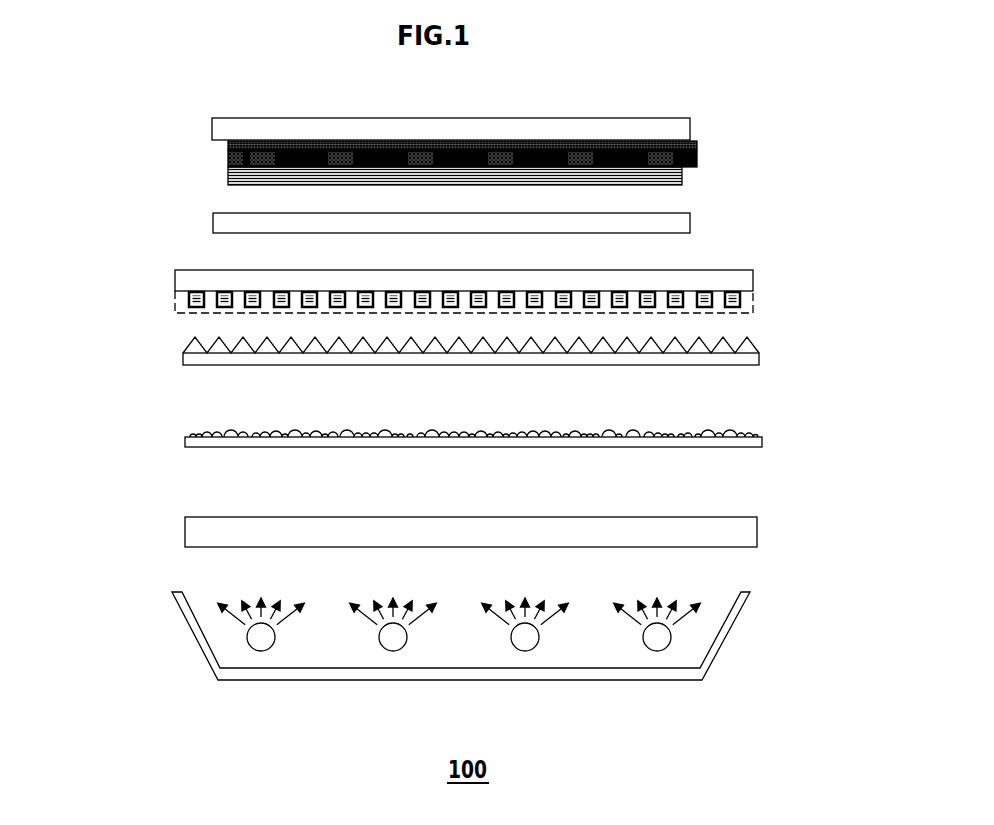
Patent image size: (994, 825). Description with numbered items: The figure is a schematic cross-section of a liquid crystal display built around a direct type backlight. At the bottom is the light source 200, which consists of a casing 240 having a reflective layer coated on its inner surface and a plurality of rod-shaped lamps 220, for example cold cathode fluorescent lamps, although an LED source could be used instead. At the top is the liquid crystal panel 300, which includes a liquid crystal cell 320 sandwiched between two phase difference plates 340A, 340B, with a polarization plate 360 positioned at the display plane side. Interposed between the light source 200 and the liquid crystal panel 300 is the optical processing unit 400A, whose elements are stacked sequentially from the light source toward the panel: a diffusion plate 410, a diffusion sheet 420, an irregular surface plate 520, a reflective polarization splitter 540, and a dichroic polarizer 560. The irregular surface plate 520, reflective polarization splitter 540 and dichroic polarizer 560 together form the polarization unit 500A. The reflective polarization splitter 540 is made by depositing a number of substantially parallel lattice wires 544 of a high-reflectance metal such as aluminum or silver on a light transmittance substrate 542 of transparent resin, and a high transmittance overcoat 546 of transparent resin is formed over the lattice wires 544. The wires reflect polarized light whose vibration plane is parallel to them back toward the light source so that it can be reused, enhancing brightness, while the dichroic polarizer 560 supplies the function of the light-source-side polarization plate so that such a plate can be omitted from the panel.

The light source 200 is at (487, 664).
The rod-shaped lamp 220 is at (258, 638).
The casing 240 is at (349, 668).
The liquid crystal panel 300 is at (470, 135).
The liquid crystal cell 320 is at (222, 158).
The phase difference plate 340A is at (696, 147).
The phase difference plate 340B is at (682, 177).
The polarization plate 360 is at (635, 126).
The optical processing unit 400A is at (441, 377).
The diffusion plate 410 is at (185, 527).
The diffusion sheet 420 is at (185, 440).
The polarization unit 500A is at (383, 294).
The irregular surface plate 520 is at (428, 356).
The reflective polarization splitter 540 is at (425, 292).
The light transmittance substrate 542 is at (175, 277).
The lattice wires 544 is at (188, 300).
The overcoat 546 is at (200, 313).
The dichroic polarizer 560 is at (213, 220).